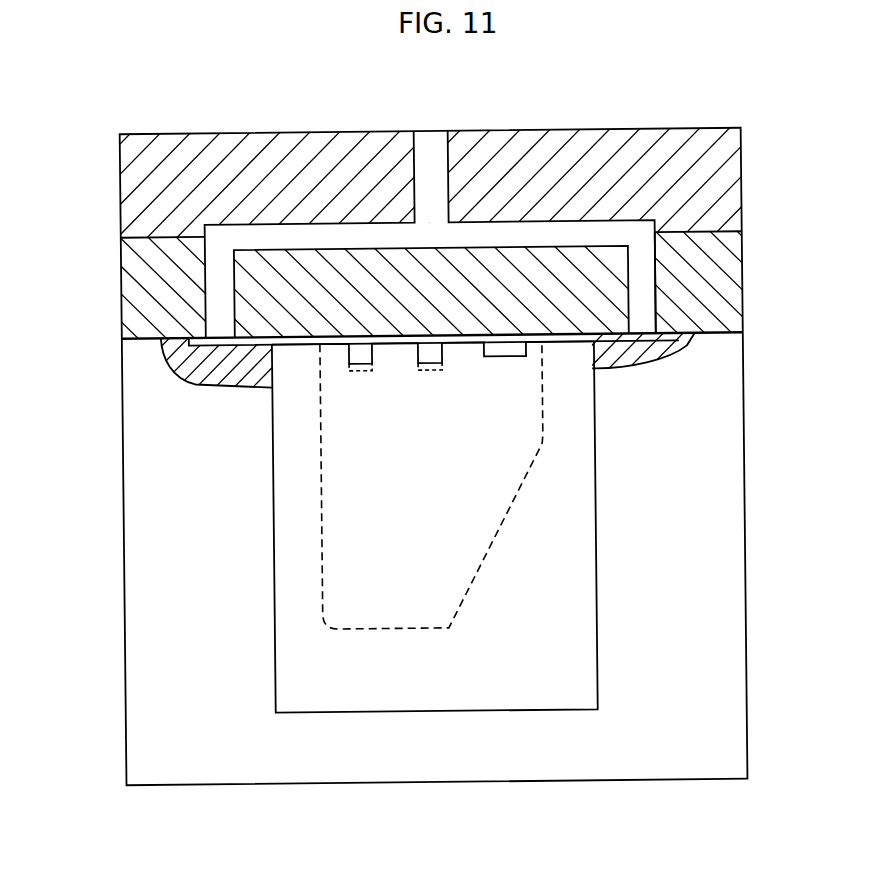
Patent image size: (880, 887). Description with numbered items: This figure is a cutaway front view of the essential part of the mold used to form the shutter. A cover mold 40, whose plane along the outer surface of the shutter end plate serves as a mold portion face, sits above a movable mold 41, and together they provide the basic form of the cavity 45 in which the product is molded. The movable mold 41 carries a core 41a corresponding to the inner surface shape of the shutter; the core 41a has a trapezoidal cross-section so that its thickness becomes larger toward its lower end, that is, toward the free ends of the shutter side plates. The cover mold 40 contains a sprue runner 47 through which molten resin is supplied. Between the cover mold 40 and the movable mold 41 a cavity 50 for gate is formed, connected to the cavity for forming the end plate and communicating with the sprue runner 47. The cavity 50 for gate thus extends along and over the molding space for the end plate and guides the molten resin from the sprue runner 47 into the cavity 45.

The cover mold 40 is at (122, 297).
The movable mold 41 is at (508, 770).
The core 41a is at (285, 512).
The cavity 45 is at (340, 345).
The sprue runner 47 is at (643, 299).
The cavity for gate 50 is at (259, 343).